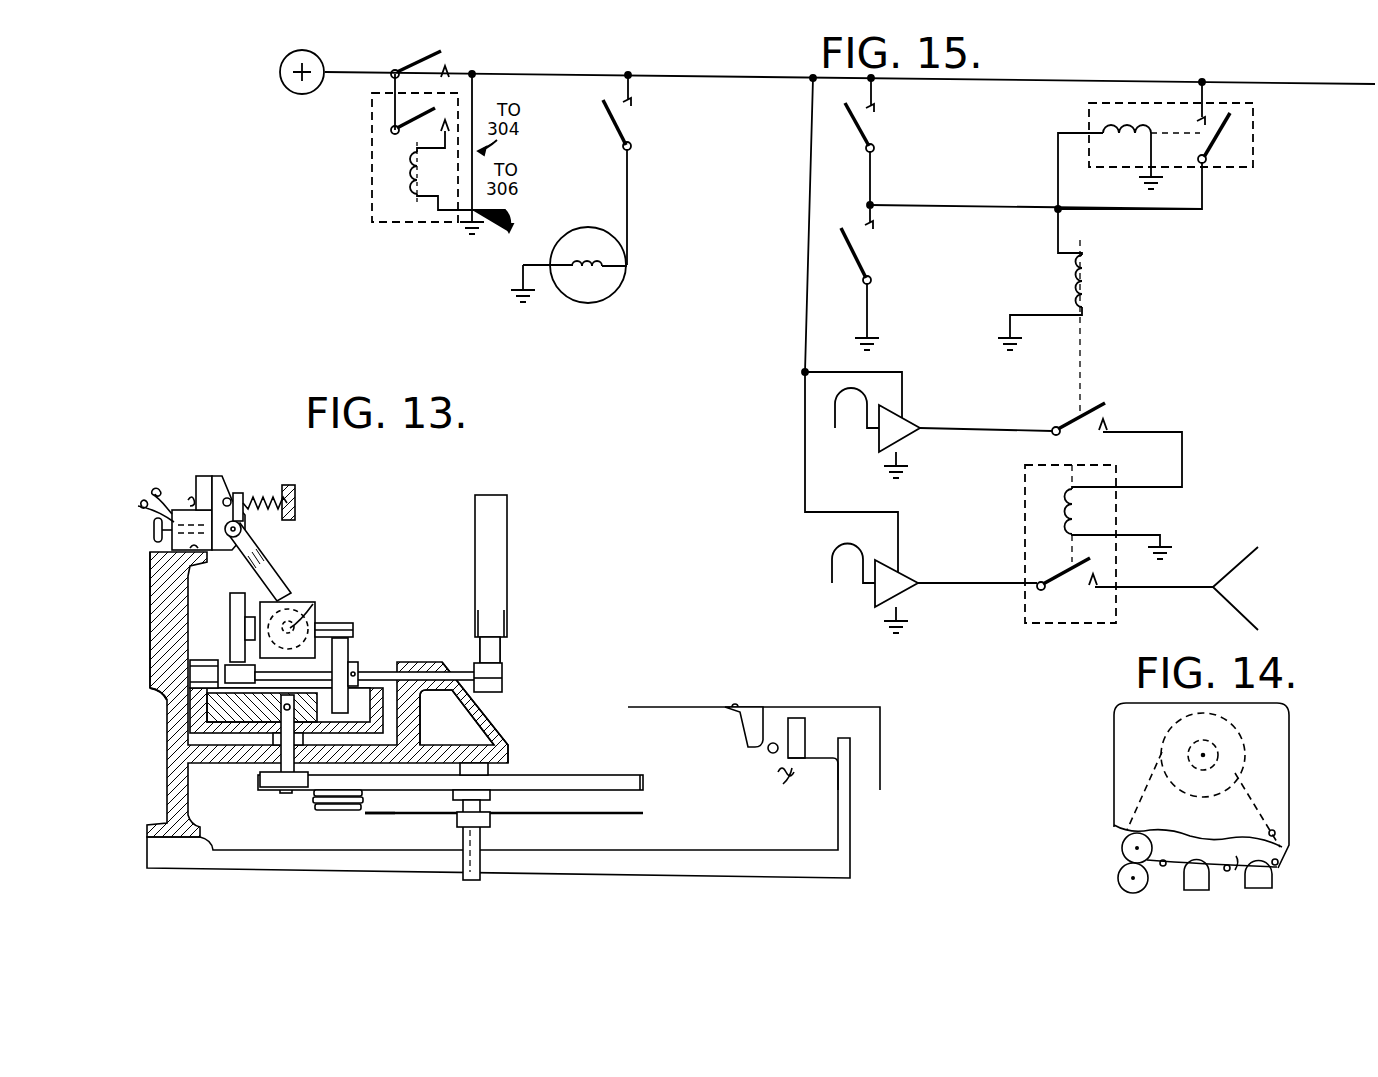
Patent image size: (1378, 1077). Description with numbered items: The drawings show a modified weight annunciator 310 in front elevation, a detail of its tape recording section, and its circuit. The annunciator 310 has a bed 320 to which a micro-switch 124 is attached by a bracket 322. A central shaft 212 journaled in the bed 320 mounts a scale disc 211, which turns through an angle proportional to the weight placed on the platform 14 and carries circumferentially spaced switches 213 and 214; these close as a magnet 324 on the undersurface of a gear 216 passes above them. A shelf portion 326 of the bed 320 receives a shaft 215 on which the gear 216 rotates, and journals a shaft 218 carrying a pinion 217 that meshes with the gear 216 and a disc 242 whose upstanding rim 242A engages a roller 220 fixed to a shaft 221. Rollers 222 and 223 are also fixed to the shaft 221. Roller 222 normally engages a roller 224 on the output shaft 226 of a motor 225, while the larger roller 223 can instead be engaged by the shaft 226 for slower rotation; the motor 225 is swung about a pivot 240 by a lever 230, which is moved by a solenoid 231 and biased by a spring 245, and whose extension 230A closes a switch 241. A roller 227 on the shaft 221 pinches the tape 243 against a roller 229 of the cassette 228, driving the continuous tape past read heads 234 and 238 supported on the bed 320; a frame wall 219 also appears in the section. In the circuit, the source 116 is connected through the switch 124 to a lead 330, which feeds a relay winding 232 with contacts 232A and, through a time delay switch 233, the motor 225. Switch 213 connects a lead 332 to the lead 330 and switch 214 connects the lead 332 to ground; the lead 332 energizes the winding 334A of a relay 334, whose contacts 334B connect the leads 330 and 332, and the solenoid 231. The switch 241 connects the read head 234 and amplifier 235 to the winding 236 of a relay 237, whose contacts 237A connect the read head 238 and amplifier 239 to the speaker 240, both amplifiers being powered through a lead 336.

In FIG. 13, the platform 14 is at (880, 707).
In FIG. 15, the source 116 is at (320, 68).
In FIG. 15, the micro-switch 124 is at (408, 60).
In FIG. 13, the micro-switch 124 is at (778, 770).
In FIG. 13, the scale disc 211 is at (606, 816).
In FIG. 13, the central shaft 212 is at (476, 878).
In FIG. 15, the switch 213 is at (872, 124).
In FIG. 13, the switch 213 is at (364, 816).
In FIG. 15, the switch 214 is at (870, 256).
In FIG. 13, the switch 214 is at (395, 857).
In FIG. 13, the shaft 215 is at (476, 742).
In FIG. 13, the gear 216 is at (556, 776).
In FIG. 13, the pinion 217 is at (260, 777).
In FIG. 13, the shaft 218 is at (282, 794).
In FIG. 13, the frame wall 219 is at (162, 704).
In FIG. 13, the roller 220 is at (190, 668).
In FIG. 13, the shaft 221 is at (454, 670).
In FIG. 13, the roller 222 is at (216, 650).
In FIG. 13, the roller 223 is at (346, 648).
In FIG. 13, the roller 224 is at (236, 606).
In FIG. 15, the motor 225 is at (626, 280).
In FIG. 13, the motor 225 is at (294, 580).
In FIG. 13, the output shaft 226 is at (336, 624).
In FIG. 13, the roller 227 is at (502, 676).
In FIG. 14, the roller 227 is at (1128, 888).
In FIG. 13, the cassette 228 is at (506, 540).
In FIG. 14, the cassette 228 is at (1288, 726).
In FIG. 13, the roller 229 is at (498, 648).
In FIG. 14, the roller 229 is at (1122, 848).
In FIG. 13, the lever 230 is at (264, 558).
In FIG. 13, the extension 230A is at (227, 498).
In FIG. 13, the solenoid 231 is at (158, 540).
In FIG. 15, the relay winding 232 is at (408, 170).
In FIG. 15, the contacts 232A is at (392, 122).
In FIG. 15, the time delay or motion sensing switch 233 is at (610, 122).
In FIG. 15, the read head 234 is at (860, 400).
In FIG. 14, the read head 234 is at (1204, 900).
In FIG. 15, the amplifier 235 is at (908, 420).
In FIG. 15, the winding 236 is at (1084, 506).
In FIG. 15, the relay 237 is at (1062, 628).
In FIG. 15, the contacts 237A is at (1054, 586).
In FIG. 15, the read head 238 is at (834, 578).
In FIG. 14, the read head 238 is at (1272, 886).
In FIG. 15, the amplifier 239 is at (908, 596).
In FIG. 15, the speaker 240 is at (1238, 566).
In FIG. 13, the speaker 240 is at (314, 604).
In FIG. 15, the switch 241 is at (1098, 406).
In FIG. 13, the switch 241 is at (202, 478).
In FIG. 13, the disc 242 is at (200, 736).
In FIG. 13, the upstanding peripheral rim 242A is at (260, 707).
In FIG. 14, the tape 243 is at (1236, 868).
In FIG. 13, the spring 245 is at (266, 498).
In FIG. 13, the weight annunciator 310 is at (664, 684).
In FIG. 13, the bed 320 is at (662, 870).
In FIG. 13, the bracket 322 is at (820, 768).
In FIG. 13, the magnet 324 is at (306, 806).
In FIG. 13, the shelf portion 326 is at (458, 744).
In FIG. 15, the lead 330 is at (702, 75).
In FIG. 15, the lead 332 is at (964, 204).
In FIG. 15, the relay 334 is at (1252, 118).
In FIG. 15, the relay winding 334A is at (1160, 116).
In FIG. 15, the contacts 334B is at (1218, 158).
In FIG. 15, the lead 336 is at (804, 346).